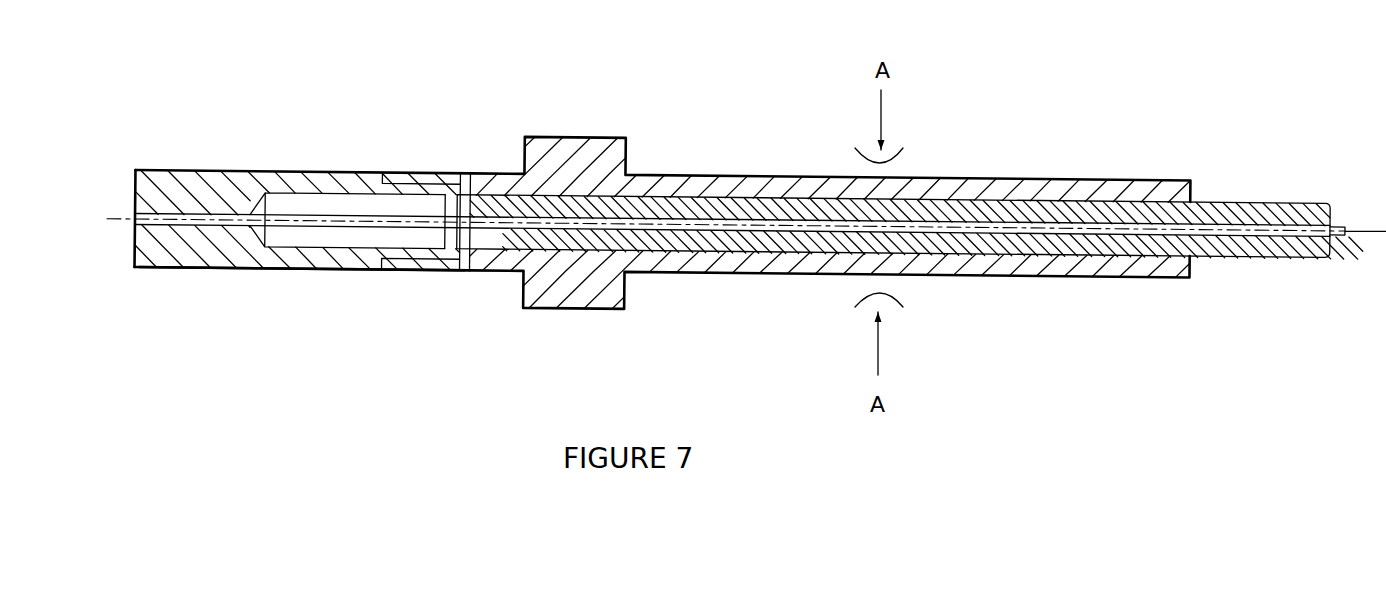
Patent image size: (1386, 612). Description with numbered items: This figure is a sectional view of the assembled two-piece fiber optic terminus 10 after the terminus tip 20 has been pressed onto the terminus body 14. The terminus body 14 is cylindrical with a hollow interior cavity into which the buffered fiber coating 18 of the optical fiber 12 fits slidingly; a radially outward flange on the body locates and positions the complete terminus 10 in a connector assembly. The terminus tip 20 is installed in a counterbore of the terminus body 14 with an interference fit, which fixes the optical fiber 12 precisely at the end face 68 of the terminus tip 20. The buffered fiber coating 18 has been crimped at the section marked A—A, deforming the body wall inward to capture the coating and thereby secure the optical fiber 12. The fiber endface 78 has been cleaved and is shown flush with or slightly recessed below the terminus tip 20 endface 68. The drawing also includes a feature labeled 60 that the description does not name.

The fiber optic terminus 10 is at (723, 93).
The optical fiber 12 is at (218, 208).
The terminus body 14 is at (587, 137).
The buffered fiber coating 18 is at (1230, 200).
The terminus tip 20 is at (245, 268).
The retaining ring 60 is at (469, 173).
The end face 68 is at (135, 192).
The fiber endface 78 is at (137, 222).